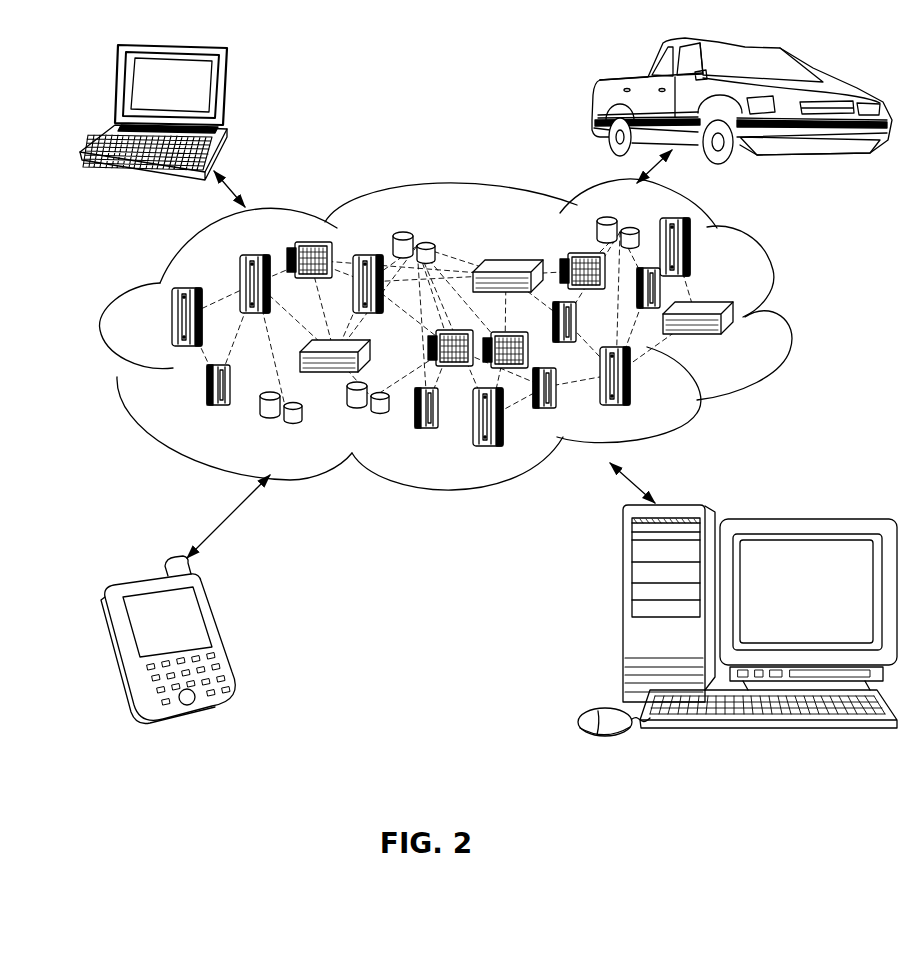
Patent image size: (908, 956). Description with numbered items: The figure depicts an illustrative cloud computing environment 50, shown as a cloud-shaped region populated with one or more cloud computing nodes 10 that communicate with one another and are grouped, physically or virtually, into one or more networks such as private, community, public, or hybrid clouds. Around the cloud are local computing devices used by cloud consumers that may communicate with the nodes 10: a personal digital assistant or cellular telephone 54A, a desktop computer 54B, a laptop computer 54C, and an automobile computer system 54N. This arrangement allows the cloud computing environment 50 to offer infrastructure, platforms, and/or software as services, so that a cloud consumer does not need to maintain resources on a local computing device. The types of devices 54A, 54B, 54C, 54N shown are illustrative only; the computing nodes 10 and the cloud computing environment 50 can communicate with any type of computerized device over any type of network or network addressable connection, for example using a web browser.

The cloud computing node 10 is at (758, 341).
The cloud computing environment 50 is at (775, 283).
The personal digital assistant or cellular telephone 54A is at (218, 632).
The desktop computer 54B is at (623, 612).
The laptop computer 54C is at (227, 88).
The automobile computer system 54N is at (600, 95).